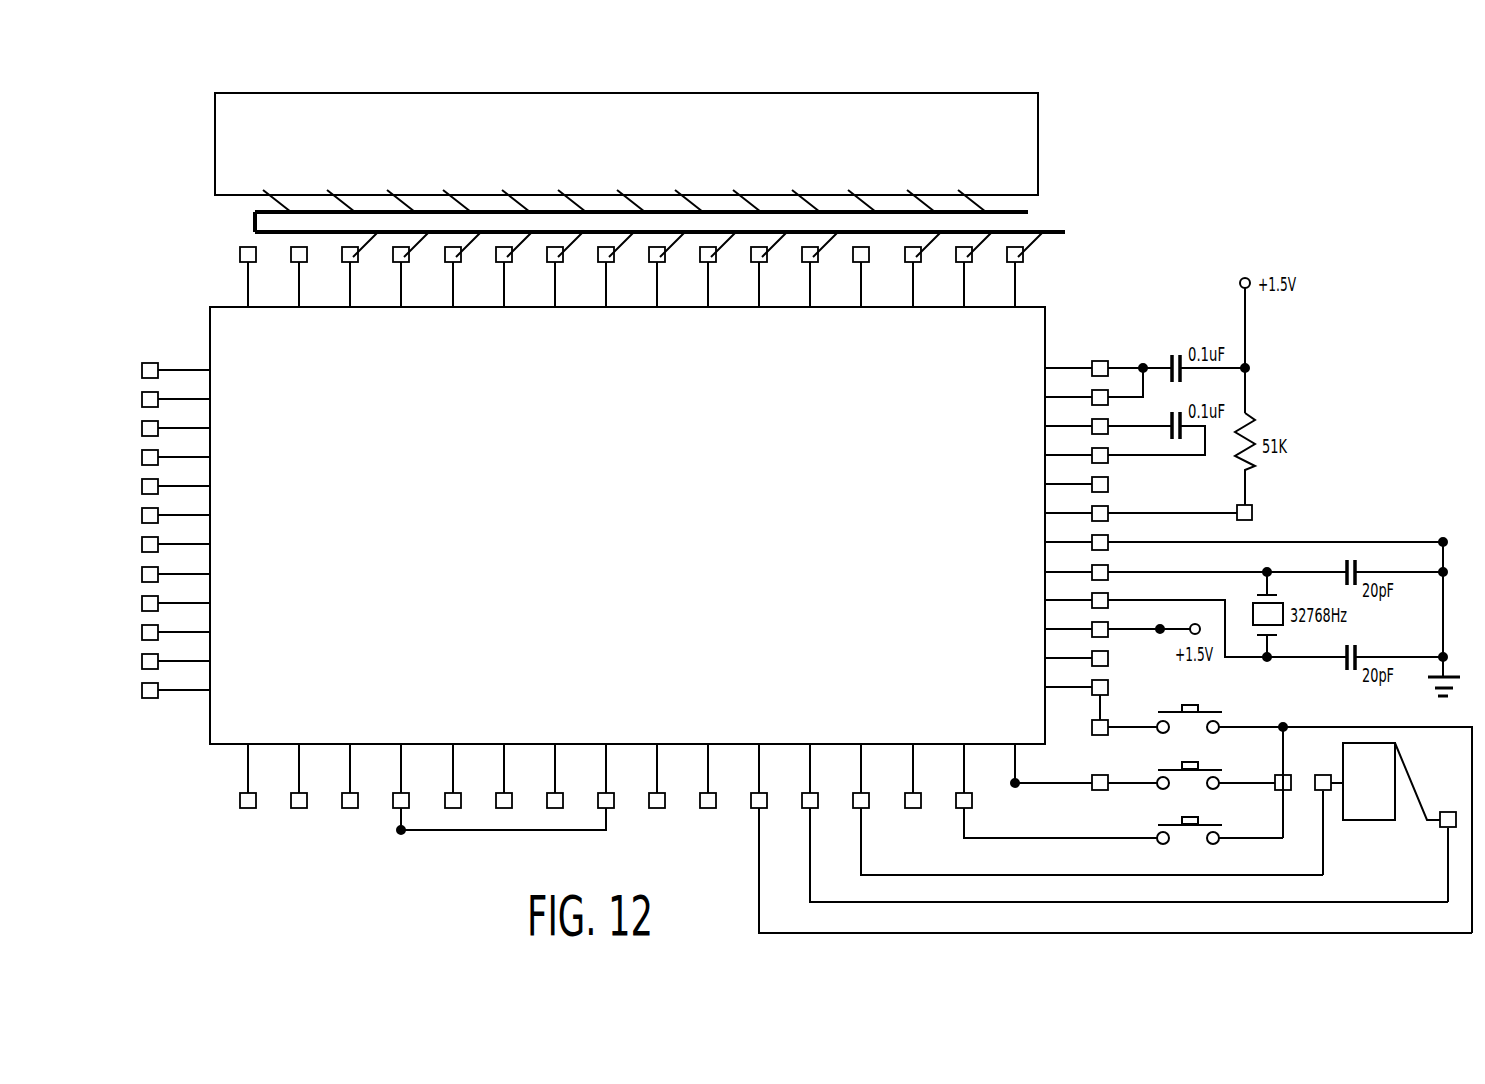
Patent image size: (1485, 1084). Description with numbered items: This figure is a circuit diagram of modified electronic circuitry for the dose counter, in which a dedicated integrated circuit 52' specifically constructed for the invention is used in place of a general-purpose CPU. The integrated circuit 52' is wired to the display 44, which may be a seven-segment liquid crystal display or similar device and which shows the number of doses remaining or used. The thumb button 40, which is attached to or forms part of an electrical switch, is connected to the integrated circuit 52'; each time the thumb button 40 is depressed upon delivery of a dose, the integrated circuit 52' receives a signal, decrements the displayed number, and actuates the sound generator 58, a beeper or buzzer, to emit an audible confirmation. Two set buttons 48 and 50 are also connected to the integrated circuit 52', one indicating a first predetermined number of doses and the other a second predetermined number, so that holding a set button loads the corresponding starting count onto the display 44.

The display 44 is at (1038, 143).
The dedicated integrated circuit 52' is at (639, 520).
The thumb button 40 is at (1198, 705).
The set button 50 is at (1198, 762).
The set button 48 is at (1198, 817).
The sound generator 58 is at (1373, 820).